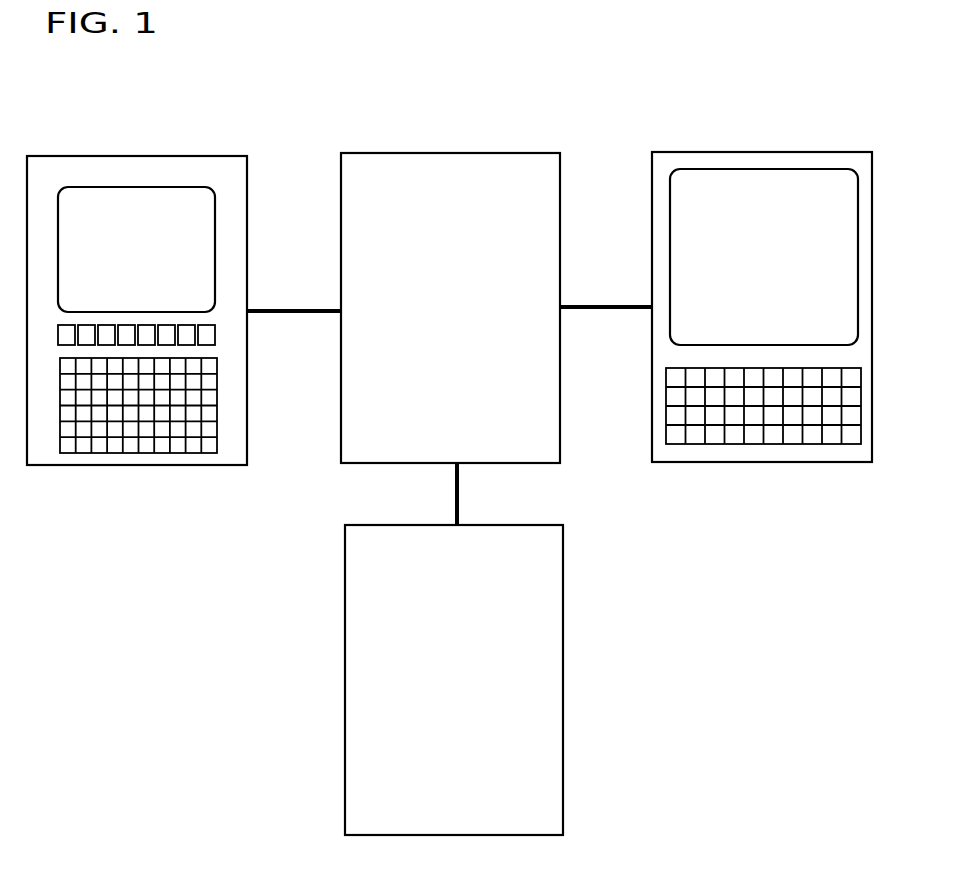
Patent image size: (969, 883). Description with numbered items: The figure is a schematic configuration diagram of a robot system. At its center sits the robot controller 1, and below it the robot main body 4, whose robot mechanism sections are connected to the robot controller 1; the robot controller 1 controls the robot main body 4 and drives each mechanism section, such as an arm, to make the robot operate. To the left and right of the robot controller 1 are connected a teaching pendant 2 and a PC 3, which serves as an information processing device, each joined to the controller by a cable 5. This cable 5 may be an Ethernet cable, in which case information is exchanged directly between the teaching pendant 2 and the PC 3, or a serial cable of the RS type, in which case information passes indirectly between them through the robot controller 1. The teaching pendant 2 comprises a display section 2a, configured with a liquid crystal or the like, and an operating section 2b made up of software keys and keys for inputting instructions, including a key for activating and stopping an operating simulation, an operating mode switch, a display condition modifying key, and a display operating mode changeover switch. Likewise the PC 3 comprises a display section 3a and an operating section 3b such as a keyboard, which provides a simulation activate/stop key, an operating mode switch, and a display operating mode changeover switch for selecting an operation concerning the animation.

The robot controller 1 is at (400, 153).
The teaching pendant 2 is at (152, 300).
The display section 2a is at (183, 187).
The operating section 2b is at (130, 453).
The PC 3 is at (746, 302).
The display section 3a is at (715, 169).
The operating section 3b is at (762, 444).
The robot main body 4 is at (345, 697).
The cable 5 is at (277, 311).